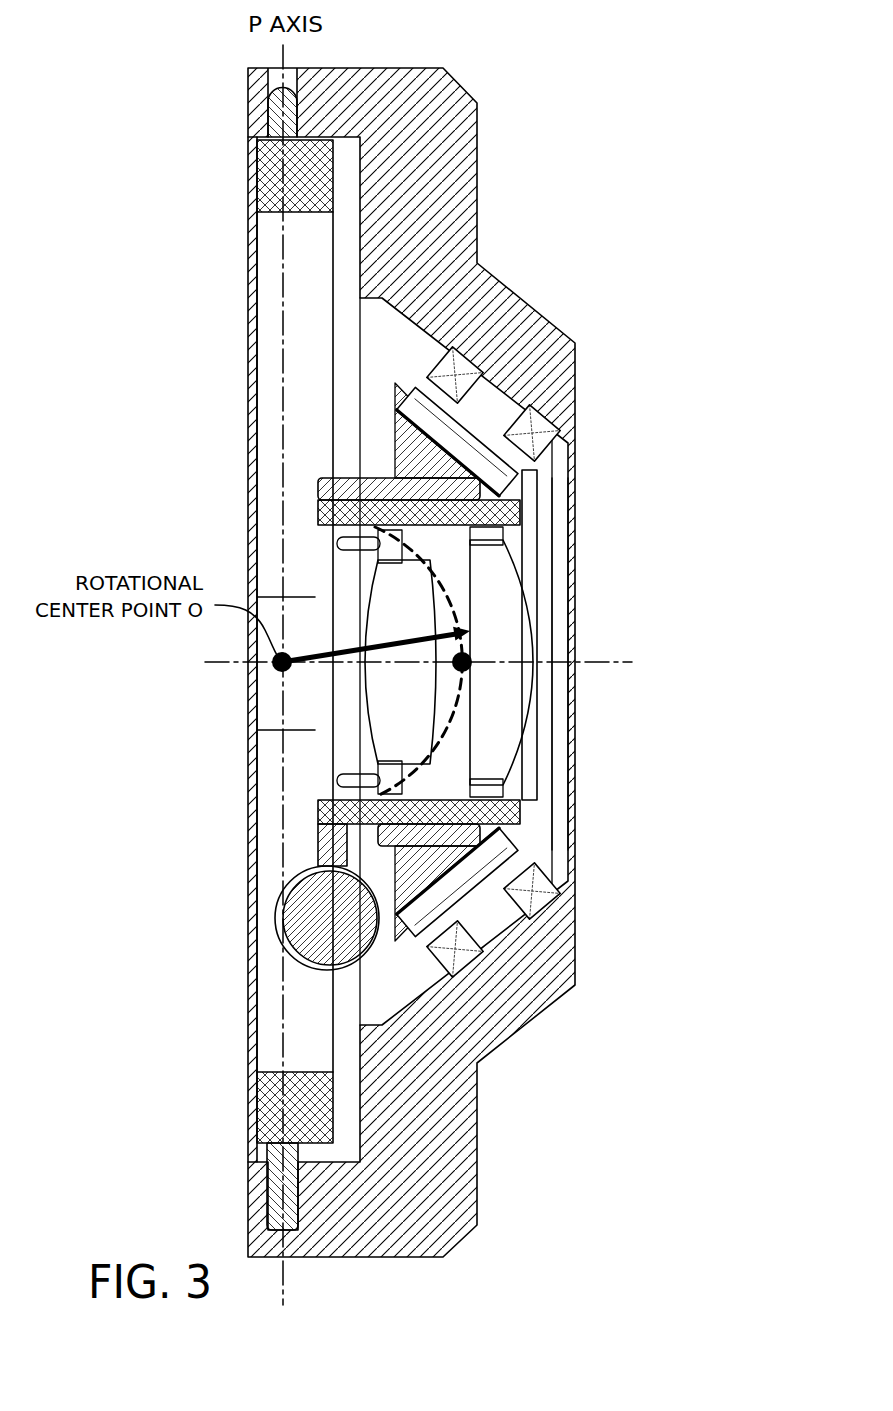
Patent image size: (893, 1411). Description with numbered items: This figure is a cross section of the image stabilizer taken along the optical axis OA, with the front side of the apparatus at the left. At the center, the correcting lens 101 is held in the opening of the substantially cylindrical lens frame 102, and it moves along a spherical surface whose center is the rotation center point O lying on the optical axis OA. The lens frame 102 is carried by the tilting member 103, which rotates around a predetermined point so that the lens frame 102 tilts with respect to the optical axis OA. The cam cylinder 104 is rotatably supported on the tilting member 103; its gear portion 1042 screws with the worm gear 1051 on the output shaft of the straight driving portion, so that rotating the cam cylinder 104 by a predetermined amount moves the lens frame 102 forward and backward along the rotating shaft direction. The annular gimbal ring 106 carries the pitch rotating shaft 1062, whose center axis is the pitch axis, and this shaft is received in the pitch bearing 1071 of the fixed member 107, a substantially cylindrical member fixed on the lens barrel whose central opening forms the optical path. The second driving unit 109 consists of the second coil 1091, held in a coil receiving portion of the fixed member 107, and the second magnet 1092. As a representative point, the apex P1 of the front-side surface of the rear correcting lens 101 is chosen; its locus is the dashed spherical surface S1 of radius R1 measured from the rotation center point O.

The correcting lens 101 is at (518, 620).
The lens frame 102 is at (520, 530).
The tilting member 103 is at (330, 510).
The cam cylinder 104 is at (325, 478).
The gear portion 1042 is at (328, 837).
The worm gear 1051 is at (322, 912).
The gimbal ring 106 is at (300, 1127).
The pitch rotating shaft 1062 is at (278, 115).
The pitch bearing 1071 is at (258, 83).
The fixed member 107 is at (450, 1160).
The second driving unit 109 is at (577, 662).
The second coil 1091 is at (532, 428).
The second magnet 1092 is at (502, 472).
The optical axis OA is at (212, 664).
The apex P1 is at (462, 662).
The radius R1 is at (376, 641).
The spherical surface S1 is at (448, 735).